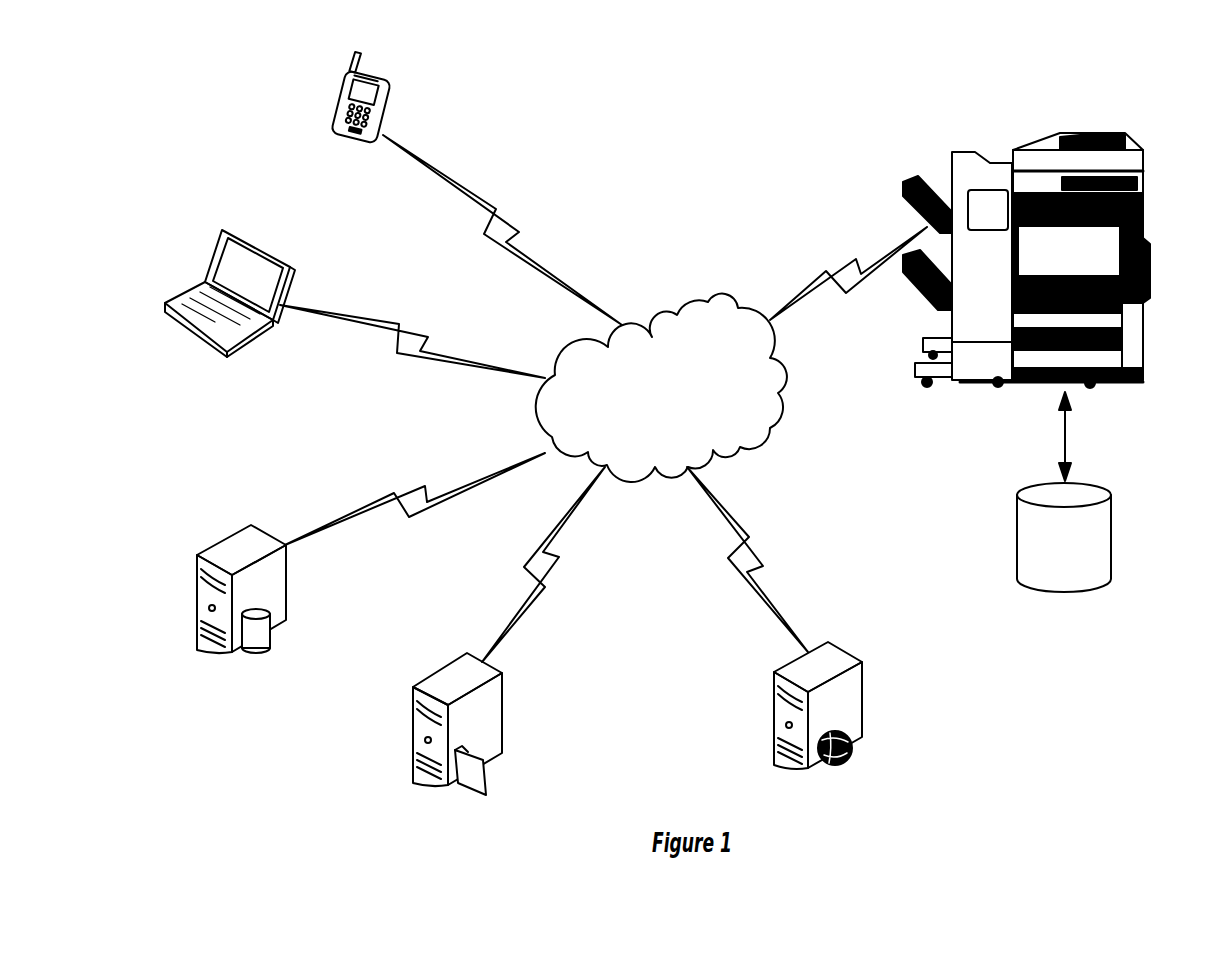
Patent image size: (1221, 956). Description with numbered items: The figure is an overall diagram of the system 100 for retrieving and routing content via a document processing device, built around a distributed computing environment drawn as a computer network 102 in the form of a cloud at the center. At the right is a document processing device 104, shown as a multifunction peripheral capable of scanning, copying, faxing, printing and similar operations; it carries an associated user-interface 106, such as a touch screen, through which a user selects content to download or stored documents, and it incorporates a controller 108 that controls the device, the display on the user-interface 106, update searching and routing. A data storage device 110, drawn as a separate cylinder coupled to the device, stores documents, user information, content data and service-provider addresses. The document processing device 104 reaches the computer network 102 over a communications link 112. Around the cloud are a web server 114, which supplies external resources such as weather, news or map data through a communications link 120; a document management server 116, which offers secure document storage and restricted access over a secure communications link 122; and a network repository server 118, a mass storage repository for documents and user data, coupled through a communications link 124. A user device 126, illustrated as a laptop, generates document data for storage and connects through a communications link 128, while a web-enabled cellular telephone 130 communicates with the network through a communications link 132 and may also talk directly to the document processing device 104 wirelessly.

The system 100 is at (763, 80).
The computer network 102 is at (718, 292).
The document processing device 104 is at (1056, 260).
The user-interface 106 is at (1143, 173).
The controller 108 is at (1143, 227).
The data storage device 110 is at (1107, 495).
The communications link 112 is at (828, 273).
The web server 114 is at (850, 658).
The document management server 116 is at (500, 670).
The network repository server 118 is at (233, 542).
The communications link 120 is at (745, 530).
The communications link 122 is at (557, 565).
The communications link 124 is at (408, 475).
The user device 126 is at (213, 253).
The communications link 128 is at (428, 337).
The web-enabled cellular telephone 130 is at (383, 84).
The communications link 132 is at (495, 208).